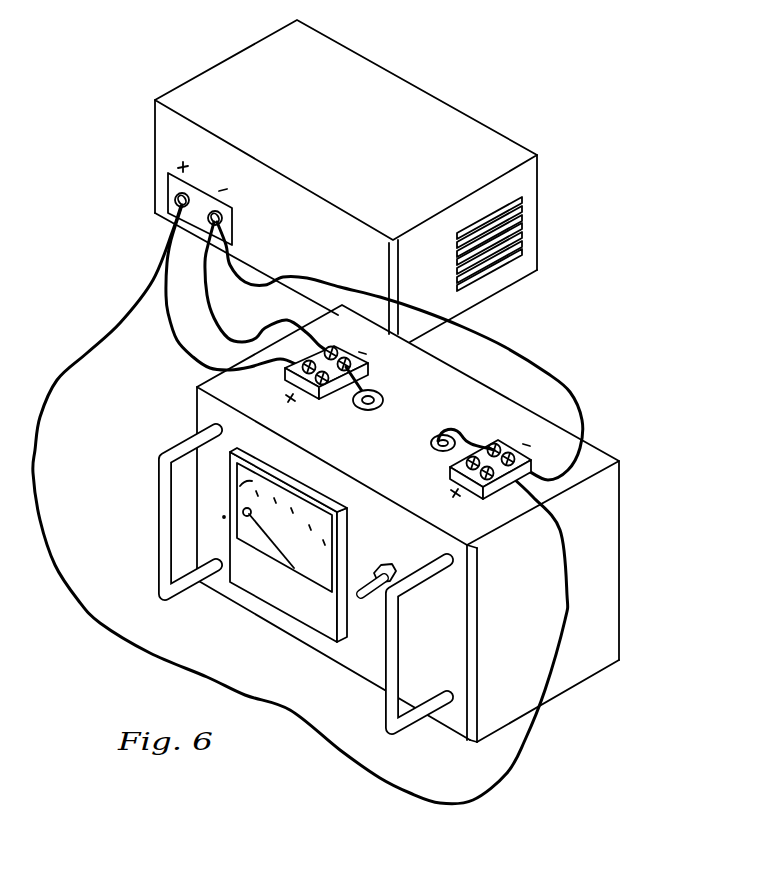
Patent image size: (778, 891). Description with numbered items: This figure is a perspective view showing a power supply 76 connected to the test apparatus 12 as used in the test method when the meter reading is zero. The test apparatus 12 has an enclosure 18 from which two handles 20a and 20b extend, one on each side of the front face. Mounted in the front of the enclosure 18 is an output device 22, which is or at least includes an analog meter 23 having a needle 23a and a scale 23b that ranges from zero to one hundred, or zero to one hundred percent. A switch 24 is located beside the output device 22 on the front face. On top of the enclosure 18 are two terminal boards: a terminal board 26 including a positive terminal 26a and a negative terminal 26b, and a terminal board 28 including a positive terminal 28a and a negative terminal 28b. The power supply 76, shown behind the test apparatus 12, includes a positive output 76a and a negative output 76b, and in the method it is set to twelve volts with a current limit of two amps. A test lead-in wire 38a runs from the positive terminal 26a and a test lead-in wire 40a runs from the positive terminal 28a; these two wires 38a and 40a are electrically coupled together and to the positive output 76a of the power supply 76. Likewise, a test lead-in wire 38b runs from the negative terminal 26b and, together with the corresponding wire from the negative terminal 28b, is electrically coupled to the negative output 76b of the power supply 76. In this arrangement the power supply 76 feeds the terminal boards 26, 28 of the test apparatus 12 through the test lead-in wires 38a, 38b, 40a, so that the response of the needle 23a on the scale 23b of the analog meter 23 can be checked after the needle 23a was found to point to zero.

The test apparatus 12 is at (421, 523).
The enclosure 18 is at (580, 668).
The handle 20a is at (405, 733).
The handle 20b is at (183, 439).
The output device 22 is at (235, 584).
The analog meter 23 is at (219, 565).
The needle 23a is at (253, 547).
The scale 23b is at (235, 472).
The switch 24 is at (363, 577).
The terminal board 26 is at (457, 464).
The positive terminal 26a is at (477, 488).
The negative terminal 26b is at (513, 437).
The terminal board 28 is at (261, 400).
The positive terminal 28a is at (284, 369).
The negative terminal 28b is at (345, 350).
The test lead-in wire 38a is at (470, 805).
The test lead-in wire 38b is at (557, 377).
The test lead-in wire 40a is at (167, 331).
The power supply 76 is at (313, 177).
The positive output 76a is at (175, 199).
The negative output 76b is at (224, 218).